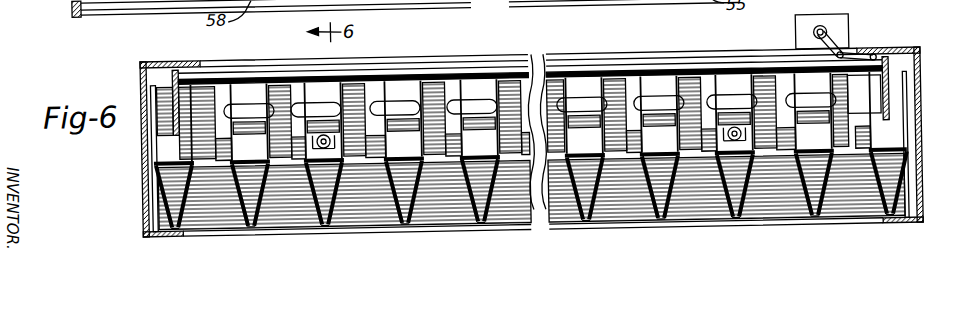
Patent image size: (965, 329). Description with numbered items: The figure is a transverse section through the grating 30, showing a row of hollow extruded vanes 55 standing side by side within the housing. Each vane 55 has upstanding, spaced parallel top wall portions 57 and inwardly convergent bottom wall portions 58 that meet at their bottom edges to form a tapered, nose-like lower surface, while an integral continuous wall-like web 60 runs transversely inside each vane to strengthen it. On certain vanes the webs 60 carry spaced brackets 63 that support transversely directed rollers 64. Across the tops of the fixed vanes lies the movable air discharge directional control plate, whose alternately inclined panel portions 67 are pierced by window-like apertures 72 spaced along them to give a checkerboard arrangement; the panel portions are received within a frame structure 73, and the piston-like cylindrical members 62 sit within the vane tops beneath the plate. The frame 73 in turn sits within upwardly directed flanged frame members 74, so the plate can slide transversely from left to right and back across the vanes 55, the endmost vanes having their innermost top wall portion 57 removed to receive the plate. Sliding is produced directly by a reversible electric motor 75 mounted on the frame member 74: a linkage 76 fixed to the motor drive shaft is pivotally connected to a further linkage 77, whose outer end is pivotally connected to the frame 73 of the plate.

The valve assembly 30 is at (918, 62).
The vane 55 is at (240, 210).
The top wall portions 57 is at (385, 105).
The bottom wall portions 58 is at (319, 208).
The wall-like web 60 is at (781, 132).
The piston cylinders 62 is at (237, 112).
The brackets 63 is at (341, 154).
The rollers 64 is at (342, 72).
The panel portions 67 is at (443, 73).
The apertures 72 is at (292, 89).
The frame structure 73 is at (887, 114).
The flanged frame members 74 is at (138, 157).
The reversible electric motor 75 is at (849, 36).
The linkage 76 is at (830, 56).
The further linkage 77 is at (858, 67).